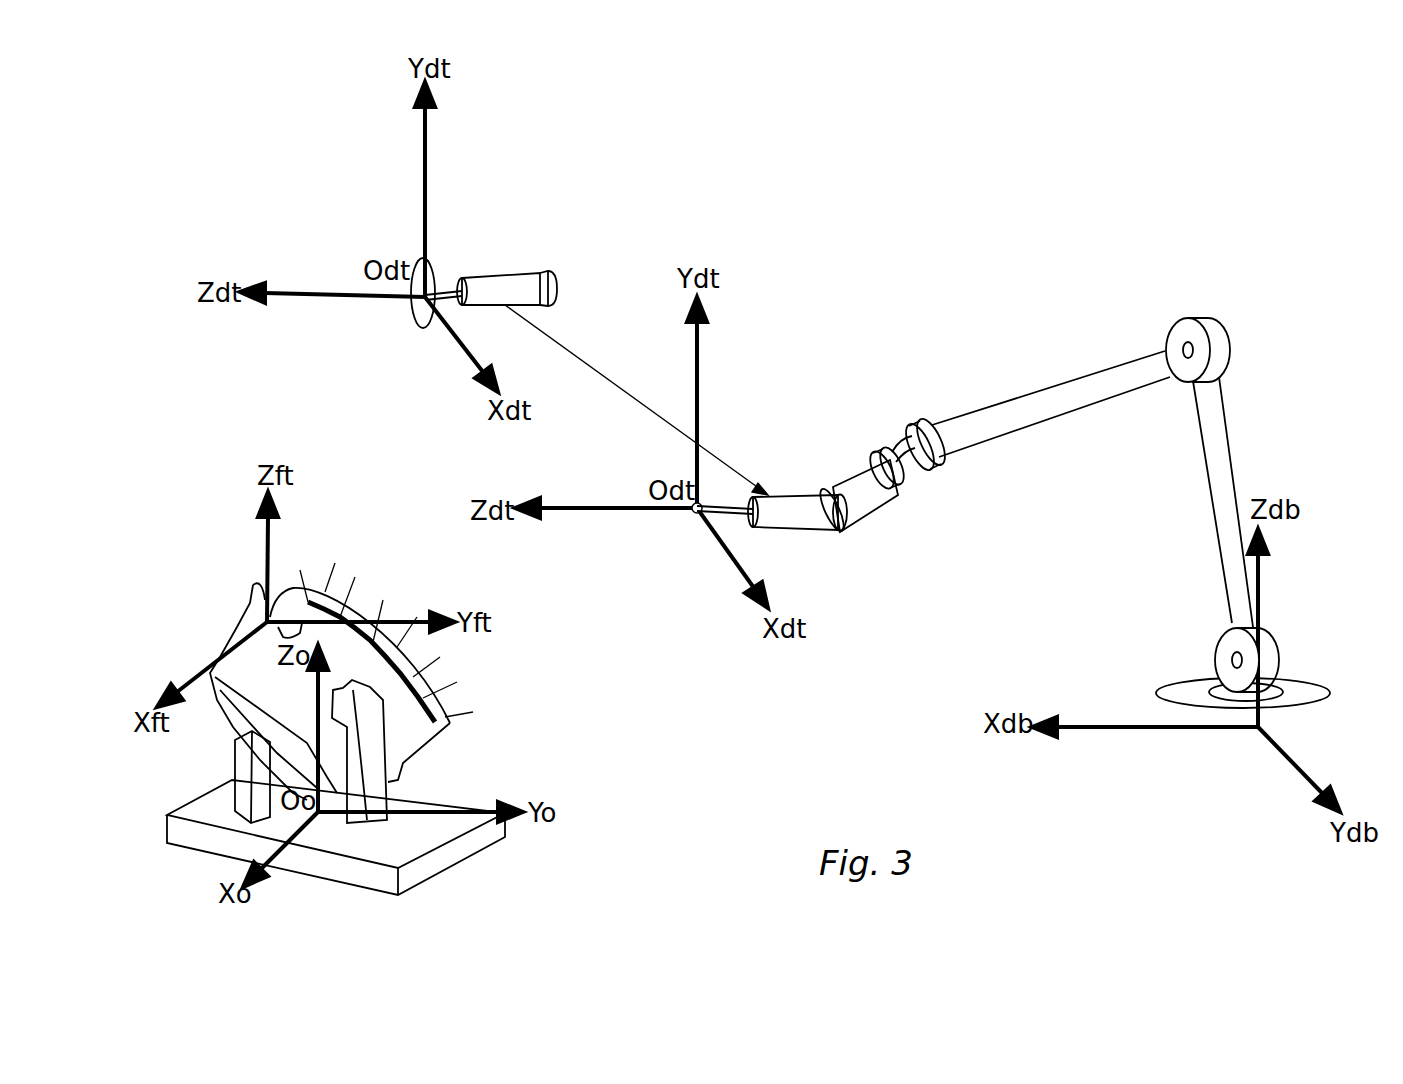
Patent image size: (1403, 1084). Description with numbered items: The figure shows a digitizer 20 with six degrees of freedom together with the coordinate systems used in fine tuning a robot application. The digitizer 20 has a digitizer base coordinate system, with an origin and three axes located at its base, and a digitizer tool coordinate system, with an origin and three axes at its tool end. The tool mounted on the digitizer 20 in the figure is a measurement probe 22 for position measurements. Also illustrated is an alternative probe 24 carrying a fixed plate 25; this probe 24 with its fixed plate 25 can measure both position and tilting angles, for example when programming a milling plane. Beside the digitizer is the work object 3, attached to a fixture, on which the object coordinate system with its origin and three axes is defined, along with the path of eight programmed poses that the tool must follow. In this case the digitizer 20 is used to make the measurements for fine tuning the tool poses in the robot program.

The work object 3 is at (412, 732).
The digitizer 20 is at (1275, 465).
The measurement probe 22 is at (729, 492).
The probe 24 is at (471, 270).
The fixed plate 25 is at (418, 322).